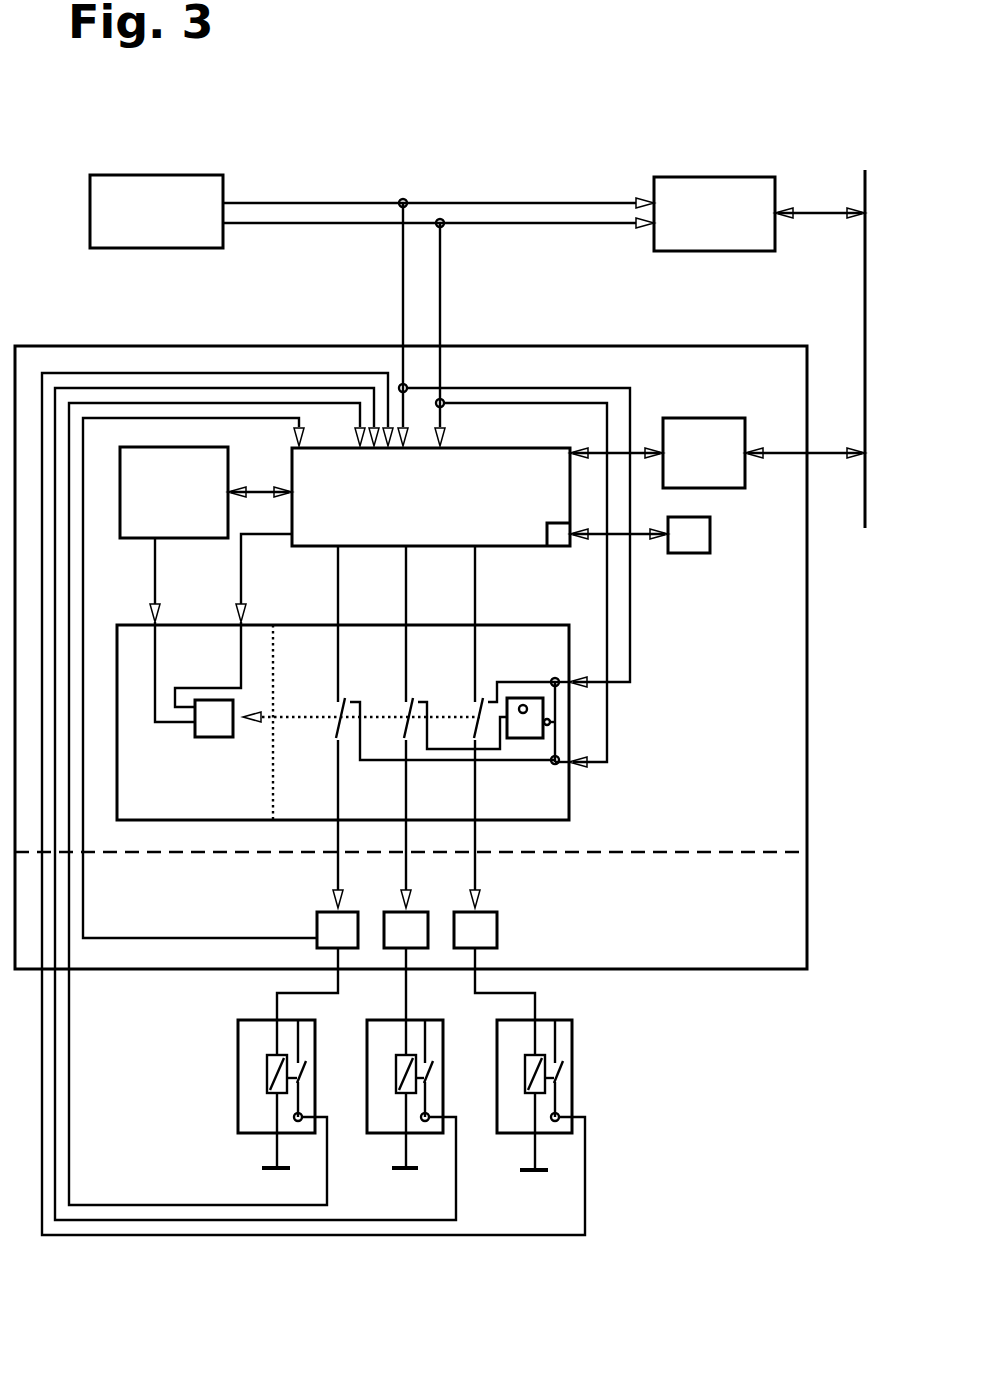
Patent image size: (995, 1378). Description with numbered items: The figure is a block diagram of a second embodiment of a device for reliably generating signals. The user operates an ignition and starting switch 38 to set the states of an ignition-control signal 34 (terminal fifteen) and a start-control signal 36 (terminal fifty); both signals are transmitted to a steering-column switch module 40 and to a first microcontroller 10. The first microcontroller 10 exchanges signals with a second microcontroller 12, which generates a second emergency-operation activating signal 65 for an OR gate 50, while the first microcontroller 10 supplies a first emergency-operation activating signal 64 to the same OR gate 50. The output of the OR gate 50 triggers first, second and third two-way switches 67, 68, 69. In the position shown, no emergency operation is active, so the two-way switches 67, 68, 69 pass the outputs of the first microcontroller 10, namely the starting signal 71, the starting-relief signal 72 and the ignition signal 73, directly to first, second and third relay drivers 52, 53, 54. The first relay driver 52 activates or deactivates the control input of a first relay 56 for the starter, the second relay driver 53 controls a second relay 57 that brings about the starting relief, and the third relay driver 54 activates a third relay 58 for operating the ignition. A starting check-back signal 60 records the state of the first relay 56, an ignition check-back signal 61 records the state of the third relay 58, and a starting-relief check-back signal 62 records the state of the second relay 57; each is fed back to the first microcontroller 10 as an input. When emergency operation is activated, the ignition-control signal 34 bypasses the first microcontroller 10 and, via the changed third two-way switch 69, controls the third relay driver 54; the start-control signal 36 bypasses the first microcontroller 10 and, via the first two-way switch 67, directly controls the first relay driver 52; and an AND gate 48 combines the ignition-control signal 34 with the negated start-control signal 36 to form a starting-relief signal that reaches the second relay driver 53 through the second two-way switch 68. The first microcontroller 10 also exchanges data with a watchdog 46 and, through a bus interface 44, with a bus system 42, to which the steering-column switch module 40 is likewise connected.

The first microcontroller 10 is at (512, 443).
The second microcontroller 12 is at (168, 443).
The ignition-control signal 34 is at (313, 203).
The start-control signal 36 is at (546, 223).
The ignition and starting switch 38 is at (165, 190).
The steering-column switch module 40 is at (714, 188).
The bus system 42 is at (865, 188).
The bus interface 44 is at (703, 433).
The watchdog 46 is at (695, 540).
The AND gate 48 is at (512, 738).
The OR gate 50 is at (212, 738).
The first relay driver 52 is at (322, 918).
The second relay driver 53 is at (390, 918).
The third relay driver 54 is at (488, 918).
The first relay 56 is at (250, 1082).
The second relay 57 is at (382, 1122).
The third relay 58 is at (563, 1050).
The starting check-back signal 60 is at (117, 1210).
The ignition check-back signal 61 is at (253, 1237).
The starting-relief check-back signal 62 is at (173, 1222).
The first emergency-operation activating signal 64 is at (240, 578).
The second emergency-operation activating signal 65 is at (153, 578).
The first two-way switch 67 is at (340, 705).
The second two-way switch 68 is at (408, 705).
The third two-way switch 69 is at (477, 705).
The starting signal 71 is at (338, 592).
The starting-relief signal 72 is at (405, 592).
The ignition signal 73 is at (475, 592).